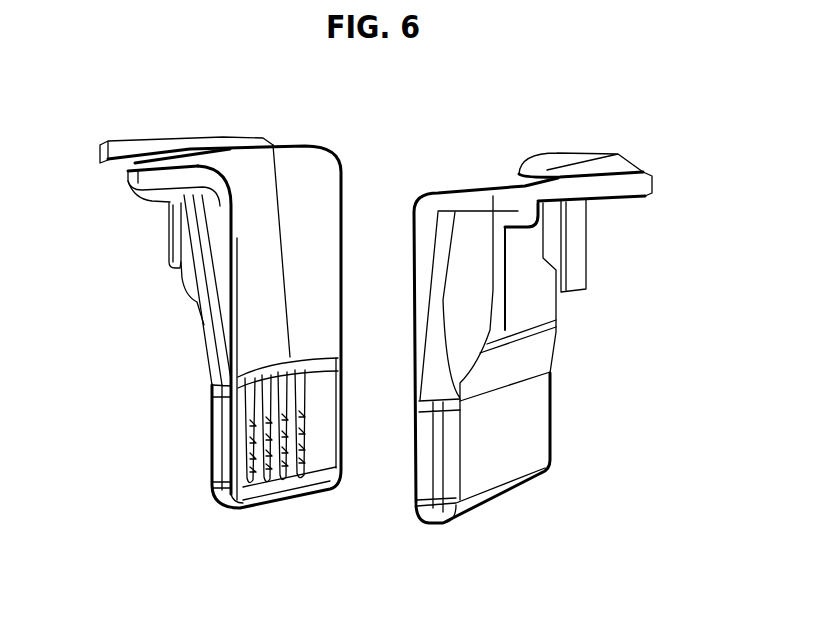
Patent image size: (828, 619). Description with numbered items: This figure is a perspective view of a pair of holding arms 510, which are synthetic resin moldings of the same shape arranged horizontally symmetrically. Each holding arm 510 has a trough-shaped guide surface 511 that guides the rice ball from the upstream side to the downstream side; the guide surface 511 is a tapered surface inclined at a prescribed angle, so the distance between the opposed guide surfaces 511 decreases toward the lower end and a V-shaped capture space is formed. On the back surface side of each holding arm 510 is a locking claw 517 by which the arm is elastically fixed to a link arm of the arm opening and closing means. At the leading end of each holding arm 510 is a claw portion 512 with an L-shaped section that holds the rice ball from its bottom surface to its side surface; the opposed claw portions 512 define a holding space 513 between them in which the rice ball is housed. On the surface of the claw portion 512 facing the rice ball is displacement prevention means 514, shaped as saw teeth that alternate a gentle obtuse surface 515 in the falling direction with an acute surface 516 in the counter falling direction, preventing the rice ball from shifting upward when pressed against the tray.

The holding arm 510 is at (156, 329).
The guide surface 511 is at (297, 179).
The claw portion 512 is at (212, 447).
The holding space 513 is at (383, 492).
The displacement prevention means 514 is at (293, 479).
The gentle obtuse surface 515 is at (302, 428).
The acute surface 516 is at (303, 458).
The locking claw 517 is at (168, 242).